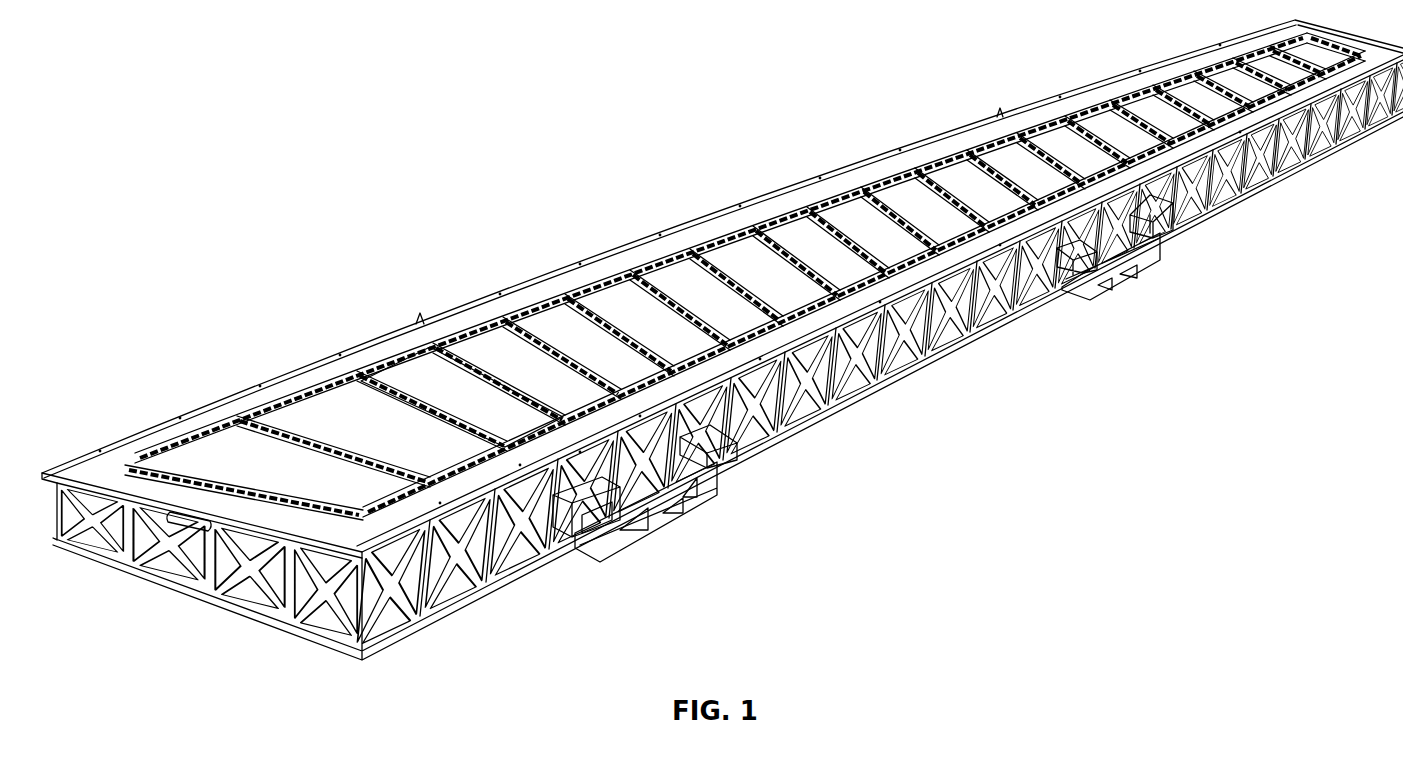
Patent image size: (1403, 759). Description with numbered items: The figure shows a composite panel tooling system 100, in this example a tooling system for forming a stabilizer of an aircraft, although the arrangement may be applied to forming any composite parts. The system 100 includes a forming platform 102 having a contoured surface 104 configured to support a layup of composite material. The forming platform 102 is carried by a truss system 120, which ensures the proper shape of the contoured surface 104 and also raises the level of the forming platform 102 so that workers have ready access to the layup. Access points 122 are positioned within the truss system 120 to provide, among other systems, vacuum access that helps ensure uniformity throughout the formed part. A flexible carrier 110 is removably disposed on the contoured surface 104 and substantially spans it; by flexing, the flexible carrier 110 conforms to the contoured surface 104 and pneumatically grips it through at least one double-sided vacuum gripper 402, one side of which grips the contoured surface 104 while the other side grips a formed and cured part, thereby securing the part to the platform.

The composite panel tooling system 100 is at (232, 248).
The forming platform 102 is at (625, 258).
The contoured surface 104 is at (362, 413).
The flexible carrier 110 is at (243, 417).
The truss system 120 is at (875, 378).
The access points 122 is at (740, 463).
The double-sided vacuum gripper 402 is at (165, 452).